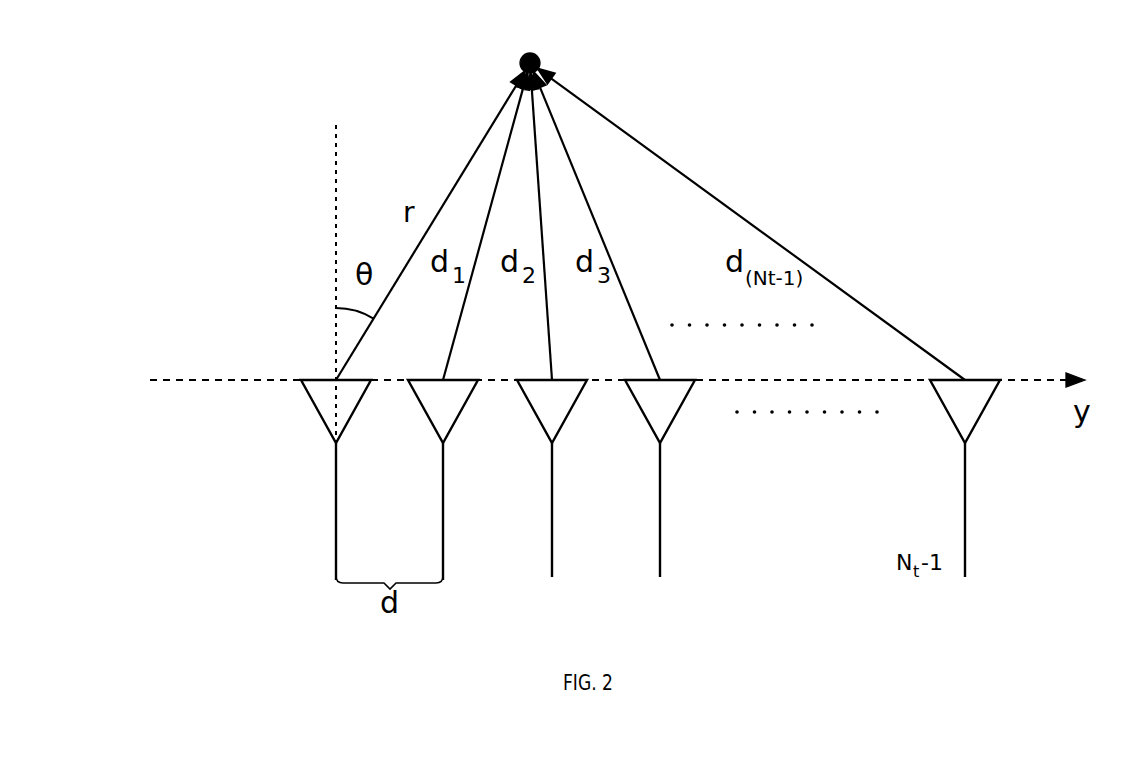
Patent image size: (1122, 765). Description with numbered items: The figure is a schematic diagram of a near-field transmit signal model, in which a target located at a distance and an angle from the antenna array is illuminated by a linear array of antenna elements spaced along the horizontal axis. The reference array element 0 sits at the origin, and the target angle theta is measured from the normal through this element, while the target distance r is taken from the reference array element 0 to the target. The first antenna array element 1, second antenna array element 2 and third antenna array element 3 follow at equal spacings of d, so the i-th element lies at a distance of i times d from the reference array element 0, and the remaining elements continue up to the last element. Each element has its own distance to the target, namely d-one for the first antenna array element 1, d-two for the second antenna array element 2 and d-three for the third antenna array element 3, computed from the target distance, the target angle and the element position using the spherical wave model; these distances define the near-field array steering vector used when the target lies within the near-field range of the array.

The reference array element 0 is at (225, 480).
The first antenna array element 1 is at (443, 480).
The second antenna array element 2 is at (552, 478).
The third antenna array element 3 is at (660, 478).